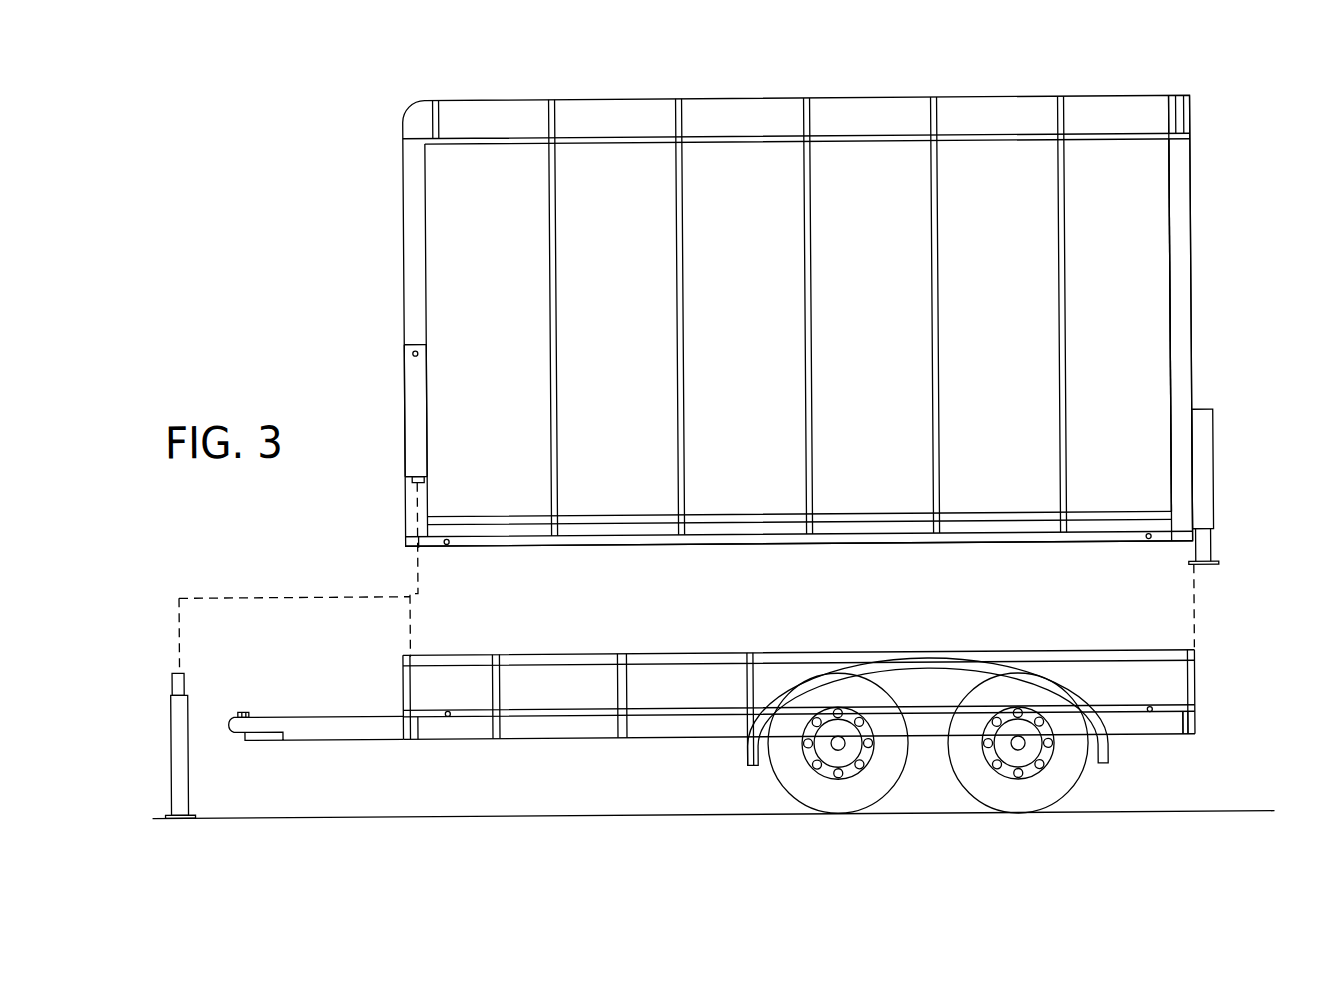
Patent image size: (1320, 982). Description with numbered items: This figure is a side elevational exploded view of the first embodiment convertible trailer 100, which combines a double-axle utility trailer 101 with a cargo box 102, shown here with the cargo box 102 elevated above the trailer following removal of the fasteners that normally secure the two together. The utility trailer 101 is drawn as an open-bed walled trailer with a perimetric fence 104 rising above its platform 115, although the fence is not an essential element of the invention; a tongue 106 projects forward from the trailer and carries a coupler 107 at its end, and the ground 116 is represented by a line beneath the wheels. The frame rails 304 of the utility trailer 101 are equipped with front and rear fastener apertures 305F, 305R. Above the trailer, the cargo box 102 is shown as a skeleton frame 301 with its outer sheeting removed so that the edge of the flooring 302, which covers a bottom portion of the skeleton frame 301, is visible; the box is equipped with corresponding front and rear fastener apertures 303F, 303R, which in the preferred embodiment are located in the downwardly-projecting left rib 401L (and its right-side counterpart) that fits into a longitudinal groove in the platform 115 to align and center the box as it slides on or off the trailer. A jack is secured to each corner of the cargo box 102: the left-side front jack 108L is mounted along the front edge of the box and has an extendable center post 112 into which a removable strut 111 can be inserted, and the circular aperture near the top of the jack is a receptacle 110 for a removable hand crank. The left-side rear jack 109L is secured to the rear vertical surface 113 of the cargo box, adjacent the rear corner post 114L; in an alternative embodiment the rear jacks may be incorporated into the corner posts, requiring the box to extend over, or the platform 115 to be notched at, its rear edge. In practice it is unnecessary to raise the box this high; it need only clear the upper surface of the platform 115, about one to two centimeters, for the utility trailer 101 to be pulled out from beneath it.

The convertible trailer 100 is at (370, 83).
The utility trailer 101 is at (771, 628).
The cargo box 102 is at (737, 116).
The perimetric fence 104 is at (588, 671).
The tongue 106 is at (373, 719).
The coupler 107 is at (233, 708).
The left-side front jack 108L is at (417, 422).
The left-side rear jack 109L is at (1204, 453).
The receptacle 110 is at (409, 350).
The removable strut 111 is at (178, 766).
The extendable center post 112 is at (411, 477).
The rear vertical surface 113 is at (1197, 368).
The rear corner post 114L is at (1183, 285).
The platform 115 is at (1170, 713).
The ground 116 is at (740, 814).
The skeleton frame 301 is at (680, 112).
The flooring 302 is at (761, 518).
The fastener aperture 303F is at (448, 548).
The fastener aperture 303R is at (1147, 546).
The frame rails 304 is at (658, 727).
The fastener aperture 305F is at (445, 716).
The fastener aperture 305R is at (1151, 720).
The left rib 401L is at (981, 541).